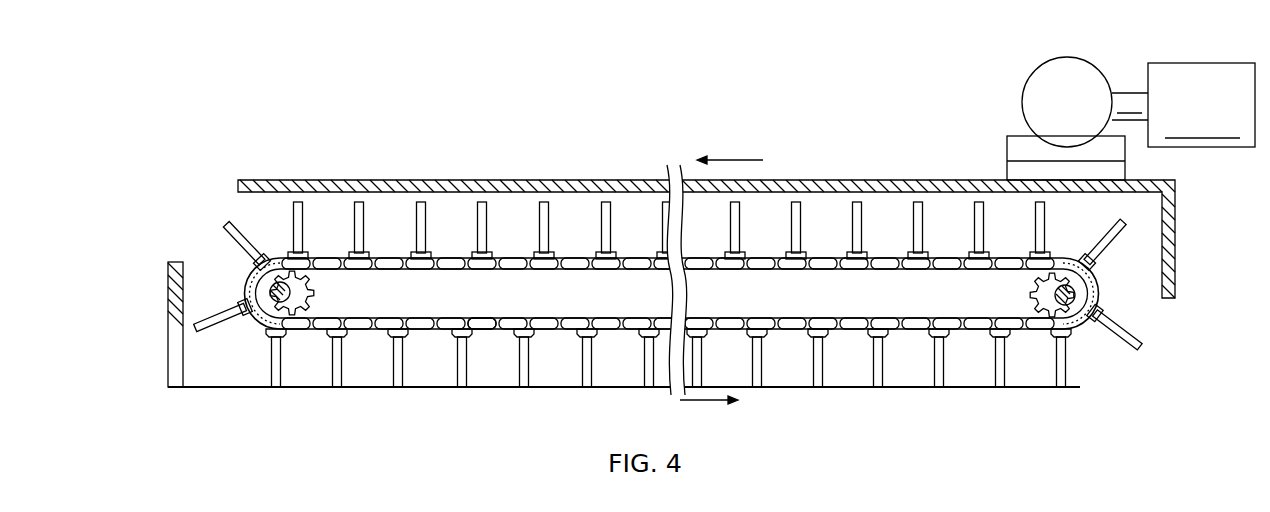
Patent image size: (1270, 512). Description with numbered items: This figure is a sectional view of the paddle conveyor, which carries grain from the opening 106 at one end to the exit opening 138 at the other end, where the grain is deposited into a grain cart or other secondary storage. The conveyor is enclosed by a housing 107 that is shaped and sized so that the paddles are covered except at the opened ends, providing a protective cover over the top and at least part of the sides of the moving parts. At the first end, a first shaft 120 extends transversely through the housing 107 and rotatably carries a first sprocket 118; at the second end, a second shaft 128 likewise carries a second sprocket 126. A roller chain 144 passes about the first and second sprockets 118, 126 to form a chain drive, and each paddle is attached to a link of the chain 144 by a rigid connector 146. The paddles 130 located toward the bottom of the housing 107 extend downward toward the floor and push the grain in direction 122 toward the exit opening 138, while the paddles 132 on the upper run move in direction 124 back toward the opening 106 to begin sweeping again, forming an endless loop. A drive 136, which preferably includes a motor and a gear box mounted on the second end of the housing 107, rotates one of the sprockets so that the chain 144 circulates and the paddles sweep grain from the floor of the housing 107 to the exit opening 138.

The opening 106 is at (200, 212).
The housing 107 is at (408, 181).
The first sprocket 118 is at (268, 305).
The first shaft 120 is at (285, 298).
The direction 122 is at (700, 405).
The direction 124 is at (743, 160).
The second sprocket 126 is at (1073, 312).
The second shaft 128 is at (1062, 297).
The paddles 130 is at (820, 383).
The paddles 132 is at (545, 225).
The drive 136 is at (1022, 95).
The exit opening 138 is at (1098, 372).
The roller chain 144 is at (428, 325).
The rigid connector 146 is at (478, 325).